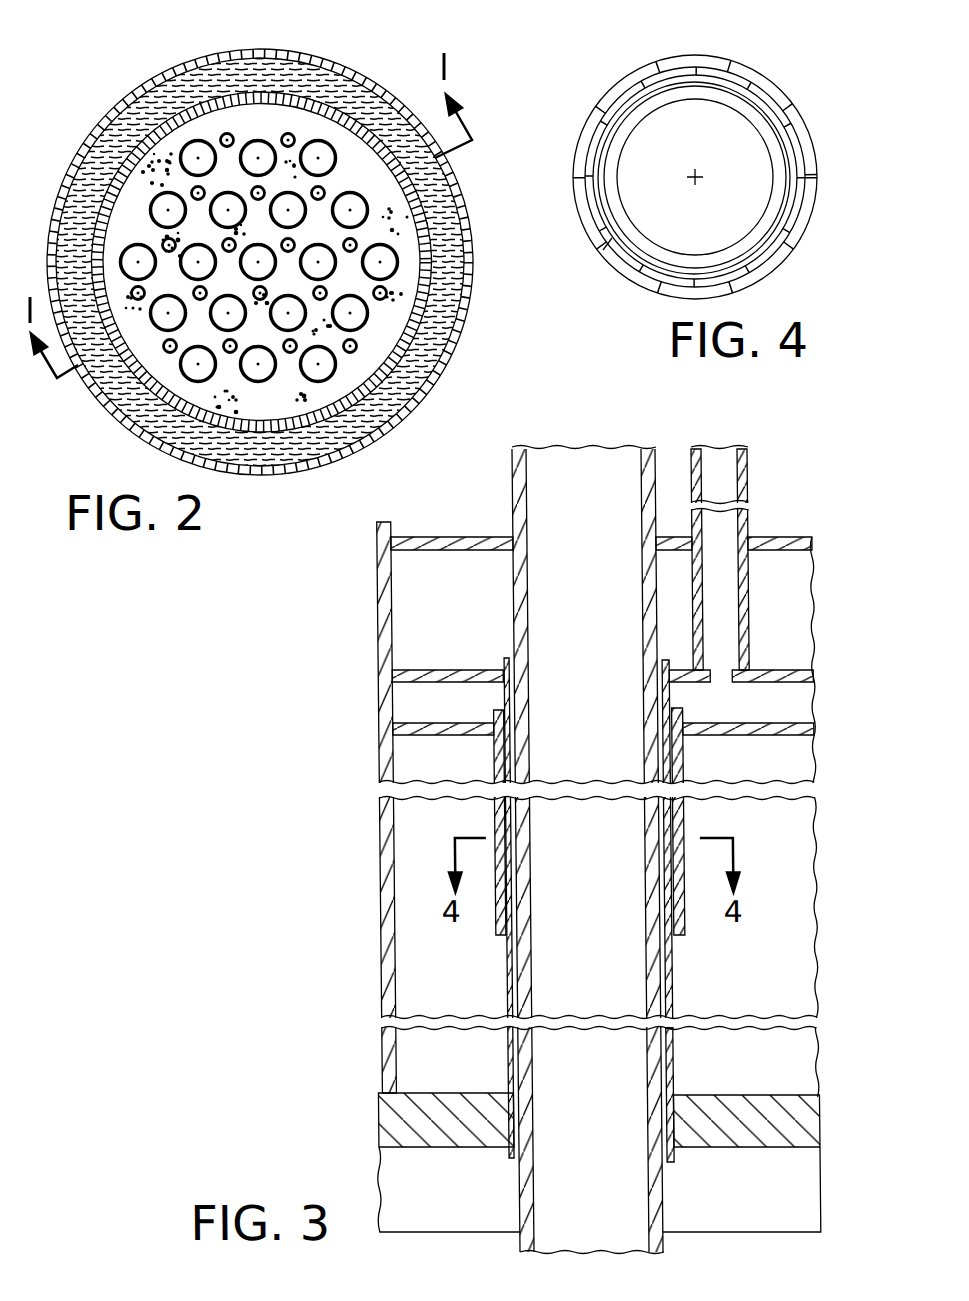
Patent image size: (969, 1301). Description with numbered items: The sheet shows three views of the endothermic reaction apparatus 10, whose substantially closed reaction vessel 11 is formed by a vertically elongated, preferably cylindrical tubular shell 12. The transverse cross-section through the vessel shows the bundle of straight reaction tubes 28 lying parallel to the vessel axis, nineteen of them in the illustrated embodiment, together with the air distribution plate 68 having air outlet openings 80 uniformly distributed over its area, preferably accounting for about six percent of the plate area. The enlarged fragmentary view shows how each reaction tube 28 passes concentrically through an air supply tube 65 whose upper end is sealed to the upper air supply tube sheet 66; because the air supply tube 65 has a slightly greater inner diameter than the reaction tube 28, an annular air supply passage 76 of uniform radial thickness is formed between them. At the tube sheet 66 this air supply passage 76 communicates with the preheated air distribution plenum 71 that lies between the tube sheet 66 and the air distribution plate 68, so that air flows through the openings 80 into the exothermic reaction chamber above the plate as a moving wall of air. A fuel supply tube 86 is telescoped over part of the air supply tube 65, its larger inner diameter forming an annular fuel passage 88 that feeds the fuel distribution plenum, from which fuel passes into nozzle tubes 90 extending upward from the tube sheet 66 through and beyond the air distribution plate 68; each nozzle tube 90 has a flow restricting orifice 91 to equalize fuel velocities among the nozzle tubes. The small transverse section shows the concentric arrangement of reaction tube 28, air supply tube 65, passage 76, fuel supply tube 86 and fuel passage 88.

In FIG. 2, the endothermic reaction apparatus 10 is at (104, 101).
In FIG. 2, the reaction vessel 11 is at (478, 205).
In FIG. 2, the tubular shell 12 is at (407, 413).
In FIG. 2, the reaction tubes 28 is at (156, 229).
In FIG. 4, the reaction tubes 28 is at (698, 90).
In FIG. 3, the reaction tubes 28 is at (648, 1198).
In FIG. 4, the air supply tubes 65 is at (789, 135).
In FIG. 3, the air supply tubes 65 is at (658, 977).
In FIG. 3, the upper air supply tube sheet 66 is at (420, 670).
In FIG. 2, the air distribution plate 68 is at (213, 123).
In FIG. 3, the air distribution plate 68 is at (458, 540).
In FIG. 3, the preheated air distribution plenum 71 is at (400, 583).
In FIG. 4, the air supply passage 76 is at (781, 234).
In FIG. 3, the air supply passage 76 is at (658, 1068).
In FIG. 2, the air outlet openings 80 is at (88, 237).
In FIG. 4, the fuel supply tube 86 is at (752, 71).
In FIG. 3, the fuel supply tube 86 is at (488, 824).
In FIG. 4, the fuel passage 88 is at (603, 250).
In FIG. 3, the fuel passage 88 is at (662, 833).
In FIG. 2, the nozzle tubes 90 is at (250, 129).
In FIG. 3, the nozzle tubes 90 is at (744, 470).
In FIG. 3, the flow restricting orifice 91 is at (716, 678).